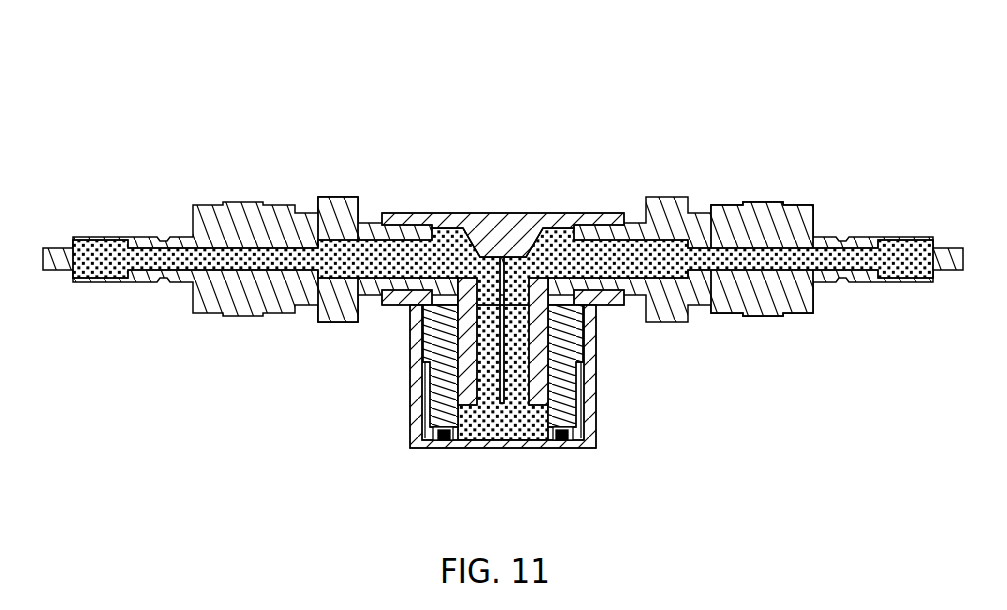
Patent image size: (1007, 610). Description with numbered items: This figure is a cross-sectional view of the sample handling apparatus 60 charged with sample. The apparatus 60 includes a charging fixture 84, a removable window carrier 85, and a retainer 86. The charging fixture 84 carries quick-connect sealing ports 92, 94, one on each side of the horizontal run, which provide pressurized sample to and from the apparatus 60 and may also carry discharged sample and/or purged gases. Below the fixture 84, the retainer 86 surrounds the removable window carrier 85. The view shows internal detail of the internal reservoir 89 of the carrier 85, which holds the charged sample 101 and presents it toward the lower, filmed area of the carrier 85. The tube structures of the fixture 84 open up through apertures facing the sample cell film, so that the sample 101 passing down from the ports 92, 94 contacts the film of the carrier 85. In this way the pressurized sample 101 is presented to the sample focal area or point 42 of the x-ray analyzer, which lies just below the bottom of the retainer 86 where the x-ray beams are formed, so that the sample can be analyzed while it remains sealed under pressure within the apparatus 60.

The apparatus 60 is at (750, 47).
The sealing port 92 is at (349, 205).
The sealing port 94 is at (792, 218).
The charging fixture 84 is at (513, 225).
The charged sample 101 is at (254, 258).
The removable window carrier 85 is at (420, 330).
The retainer 86 is at (415, 383).
The internal reservoir 89 is at (528, 418).
The sample focal point 42 is at (502, 447).